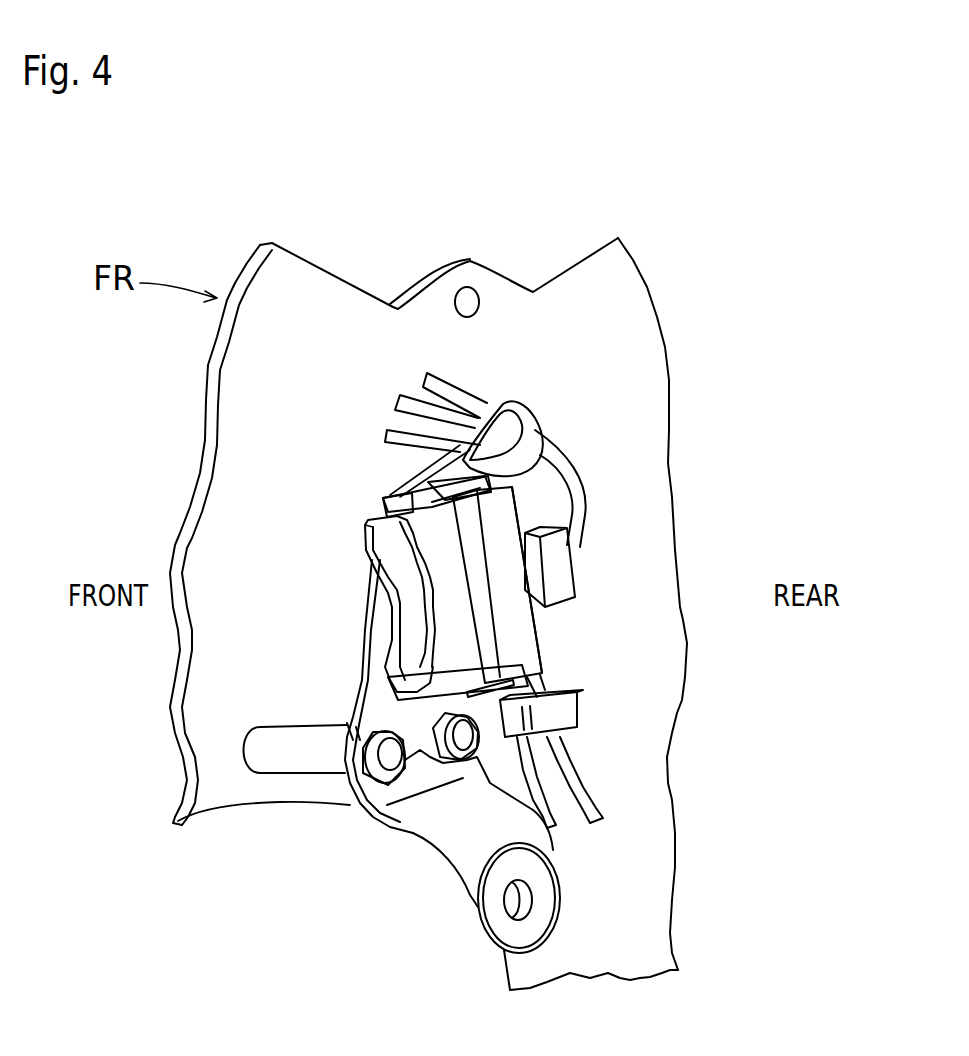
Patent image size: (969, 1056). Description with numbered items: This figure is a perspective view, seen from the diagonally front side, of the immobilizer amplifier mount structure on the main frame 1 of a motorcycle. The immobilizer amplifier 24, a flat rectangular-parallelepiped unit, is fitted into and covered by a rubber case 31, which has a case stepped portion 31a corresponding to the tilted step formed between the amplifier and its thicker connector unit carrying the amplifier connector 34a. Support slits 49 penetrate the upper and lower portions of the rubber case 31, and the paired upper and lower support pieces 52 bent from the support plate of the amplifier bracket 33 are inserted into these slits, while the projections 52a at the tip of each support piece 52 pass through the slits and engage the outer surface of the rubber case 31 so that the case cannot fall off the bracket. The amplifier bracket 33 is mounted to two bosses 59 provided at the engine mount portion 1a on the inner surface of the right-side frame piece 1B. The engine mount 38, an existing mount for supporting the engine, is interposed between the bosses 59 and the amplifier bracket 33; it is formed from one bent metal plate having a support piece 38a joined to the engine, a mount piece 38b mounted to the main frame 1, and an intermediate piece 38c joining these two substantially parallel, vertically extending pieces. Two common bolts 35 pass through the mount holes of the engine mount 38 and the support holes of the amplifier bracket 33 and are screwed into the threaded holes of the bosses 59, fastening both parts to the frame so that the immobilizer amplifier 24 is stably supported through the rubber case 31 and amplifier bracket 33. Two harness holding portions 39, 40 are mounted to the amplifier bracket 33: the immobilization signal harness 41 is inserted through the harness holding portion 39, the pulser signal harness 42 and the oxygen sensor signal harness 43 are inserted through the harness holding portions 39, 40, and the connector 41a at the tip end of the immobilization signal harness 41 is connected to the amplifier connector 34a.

The main frame 1 is at (245, 421).
The right-side frame piece 1B is at (385, 614).
The engine mount portion 1a is at (347, 783).
The immobilizer amplifier 24 is at (410, 577).
The rubber case 31 is at (600, 585).
The case stepped portion 31a is at (472, 555).
The amplifier bracket 33 is at (350, 630).
The amplifier connector 34a is at (542, 587).
The bolt 35 is at (390, 757).
The engine mount 38 is at (312, 878).
The support piece 38a is at (460, 893).
The mount piece 38b is at (345, 740).
The intermediate piece 38c is at (447, 833).
The harness holding portion 39 is at (527, 433).
The harness holding portion 40 is at (583, 697).
The immobilization signal harness 41 is at (563, 470).
The connector 41a is at (558, 557).
The pulser signal harness 42 is at (550, 762).
The oxygen sensor signal harness 43 is at (537, 803).
The support slit 49 is at (407, 497).
The support piece 52 is at (372, 525).
The projection 52a is at (375, 497).
The boss 59 is at (278, 763).